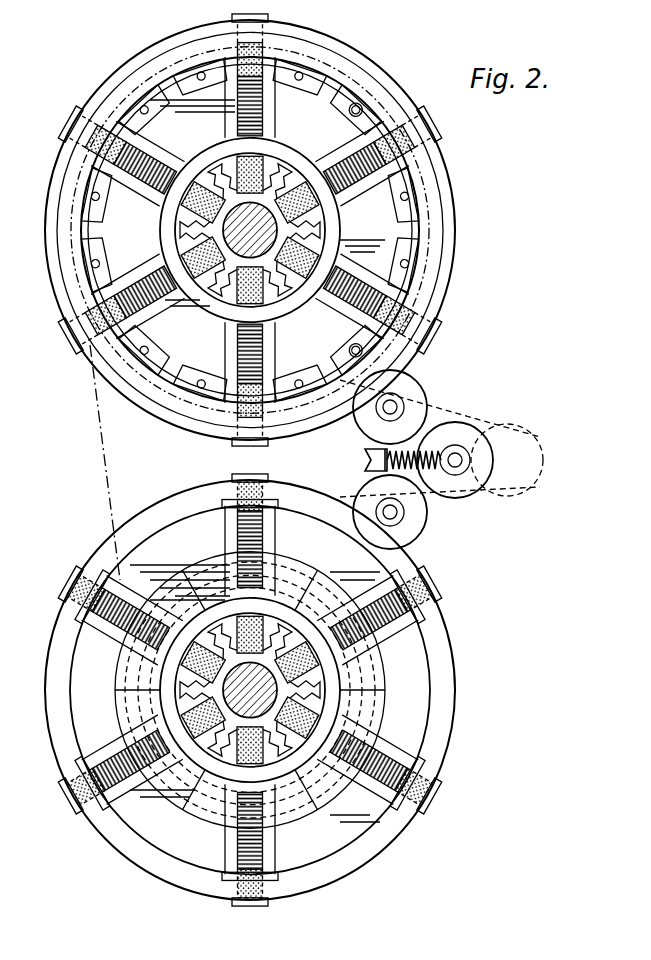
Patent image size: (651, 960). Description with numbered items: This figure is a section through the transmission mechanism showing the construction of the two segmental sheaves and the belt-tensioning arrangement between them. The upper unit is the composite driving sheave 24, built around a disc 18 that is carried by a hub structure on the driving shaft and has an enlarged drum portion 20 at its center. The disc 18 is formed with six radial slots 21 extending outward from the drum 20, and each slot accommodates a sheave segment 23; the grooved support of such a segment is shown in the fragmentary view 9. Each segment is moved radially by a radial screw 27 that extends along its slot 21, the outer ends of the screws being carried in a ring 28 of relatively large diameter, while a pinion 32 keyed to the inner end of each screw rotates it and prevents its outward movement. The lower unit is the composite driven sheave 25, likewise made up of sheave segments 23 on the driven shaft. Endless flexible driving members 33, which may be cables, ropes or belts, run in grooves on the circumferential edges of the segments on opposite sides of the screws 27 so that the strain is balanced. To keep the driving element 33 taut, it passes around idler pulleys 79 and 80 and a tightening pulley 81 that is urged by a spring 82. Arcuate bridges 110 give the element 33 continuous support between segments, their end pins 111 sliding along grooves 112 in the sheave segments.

The fragmentary view 9 is at (176, 118).
The disc 18 is at (417, 708).
The drum portion 20 is at (338, 230).
The radial slots 21 is at (392, 633).
The sheave segment 23 is at (377, 110).
The composite driving sheave 24 is at (368, 688).
The composite driven sheave 25 is at (430, 178).
The radial screws 27 is at (263, 99).
The ring 28 is at (455, 249).
The pinion 32 is at (262, 165).
The endless flexible driving member 33 is at (102, 468).
The idler pulley 79 is at (405, 405).
The idler pulley 80 is at (408, 515).
The tightening pulley 81 is at (478, 462).
The spring 82 is at (368, 462).
The bridges 110 is at (417, 228).
The pins 111 is at (408, 270).
The grooves 112 is at (405, 290).